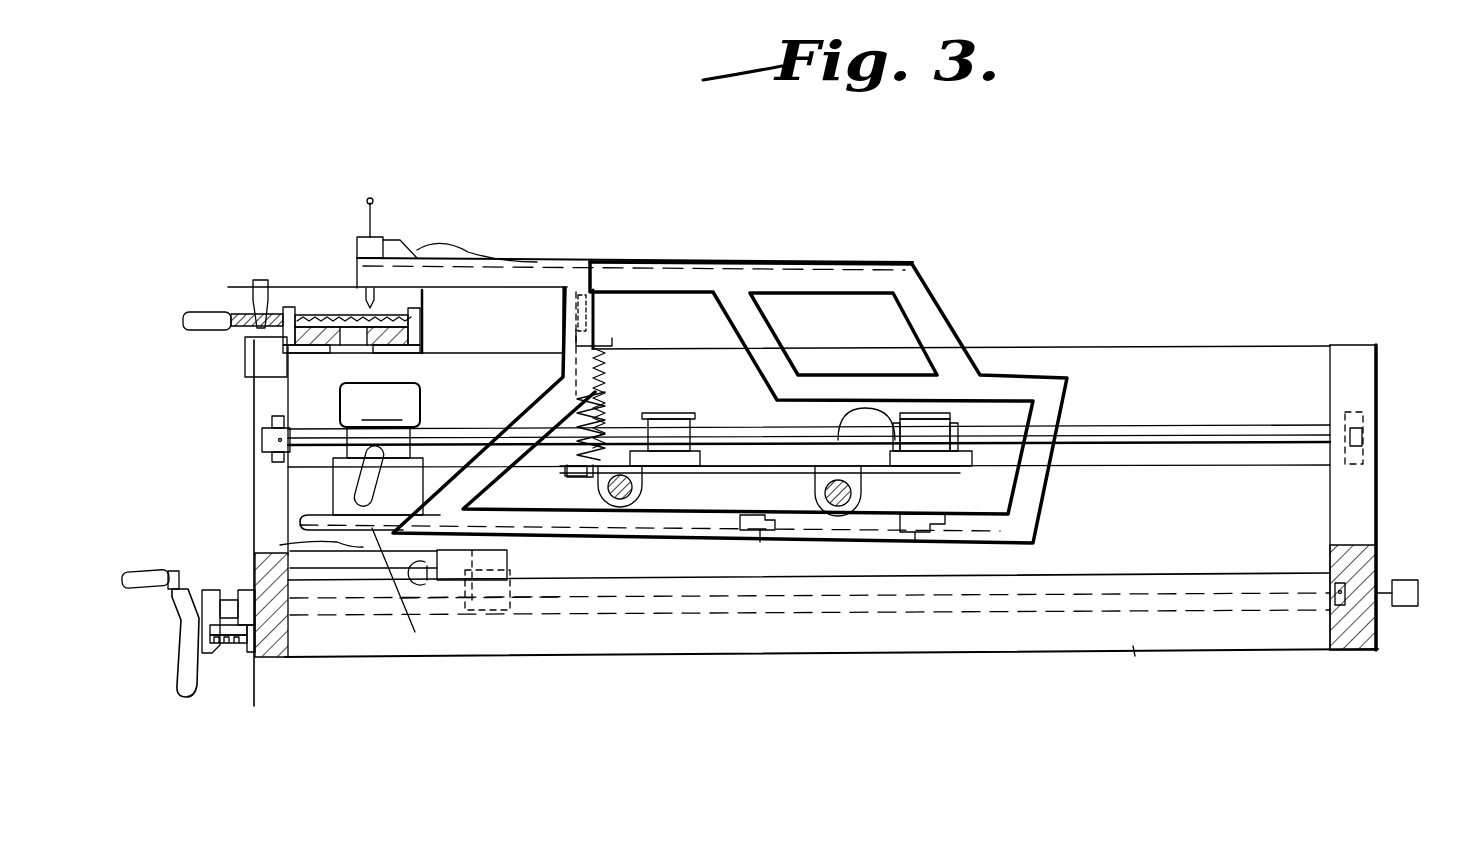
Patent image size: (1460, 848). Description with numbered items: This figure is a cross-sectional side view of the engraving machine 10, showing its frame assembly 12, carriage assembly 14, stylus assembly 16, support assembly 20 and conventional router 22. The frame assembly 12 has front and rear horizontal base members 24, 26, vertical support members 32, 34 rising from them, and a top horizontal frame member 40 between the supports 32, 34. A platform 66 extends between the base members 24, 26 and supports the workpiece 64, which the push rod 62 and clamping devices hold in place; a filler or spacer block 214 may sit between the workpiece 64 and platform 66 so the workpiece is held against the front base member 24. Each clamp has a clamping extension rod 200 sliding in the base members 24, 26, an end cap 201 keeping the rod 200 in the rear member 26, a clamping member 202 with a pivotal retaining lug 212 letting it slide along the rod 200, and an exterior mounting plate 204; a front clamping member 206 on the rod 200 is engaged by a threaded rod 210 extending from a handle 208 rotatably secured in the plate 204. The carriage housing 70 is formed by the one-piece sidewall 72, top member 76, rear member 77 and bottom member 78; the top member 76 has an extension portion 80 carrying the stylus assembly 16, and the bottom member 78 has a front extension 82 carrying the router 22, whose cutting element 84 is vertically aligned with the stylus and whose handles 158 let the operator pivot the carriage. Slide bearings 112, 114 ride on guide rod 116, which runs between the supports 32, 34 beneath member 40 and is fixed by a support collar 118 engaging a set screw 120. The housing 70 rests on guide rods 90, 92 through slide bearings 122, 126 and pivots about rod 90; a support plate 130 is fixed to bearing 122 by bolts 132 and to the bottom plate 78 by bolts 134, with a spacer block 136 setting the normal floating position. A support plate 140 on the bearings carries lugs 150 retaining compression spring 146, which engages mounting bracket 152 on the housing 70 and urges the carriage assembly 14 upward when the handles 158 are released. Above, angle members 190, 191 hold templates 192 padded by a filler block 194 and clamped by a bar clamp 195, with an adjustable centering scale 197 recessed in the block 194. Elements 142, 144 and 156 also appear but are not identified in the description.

The engraving machine 10 is at (448, 790).
The frame assembly 12 is at (1195, 338).
The carriage assembly 14 is at (855, 232).
The stylus assembly 16 is at (343, 242).
The support assembly 20 is at (968, 477).
The conventional router 22 is at (380, 420).
The front horizontal base member 24 is at (268, 660).
The rear horizontal base member 26 is at (1378, 638).
The vertical support member 32 is at (1362, 488).
The vertical support member 34 is at (266, 492).
The top horizontal frame member 40 is at (1275, 355).
The push rod 62 is at (455, 550).
The workpiece 64 is at (459, 585).
The platform 66 is at (1134, 652).
The housing 70 is at (952, 322).
The sidewall 72 is at (965, 352).
The top member 76 is at (545, 262).
The rear member 77 is at (1055, 400).
The bottom member 78 is at (690, 548).
The extension portion 80 is at (452, 250).
The front extension 82 is at (285, 548).
The cutting element 84 is at (415, 588).
The guide rod 90 is at (838, 507).
The guide rod 92 is at (622, 500).
The slide bearing 112 is at (668, 420).
The slide bearing 114 is at (902, 412).
The guide rod 116 is at (1185, 440).
The support collar 118 is at (1350, 452).
The set screw 120 is at (262, 440).
The slide bearing 122 is at (870, 495).
The slide bearing 126 is at (596, 495).
The support plate 130 is at (771, 508).
The bolts 132 is at (919, 511).
The bolts 134 is at (762, 534).
The spacer block 136 is at (986, 499).
The support plate 140 is at (748, 440).
The bracket 142 is at (822, 470).
The stop member 144 is at (668, 492).
The compression spring 146 is at (608, 400).
The lugs 150 is at (540, 455).
The mounting bracket 152 is at (613, 337).
The plunger rod 156 is at (594, 304).
The handles 158 is at (370, 487).
The angle member 190 is at (420, 337).
The angle member 191 is at (242, 330).
The templates 192 is at (385, 313).
The filler block 194 is at (385, 352).
The bar clamp 195 is at (347, 253).
The adjustable centering scale 197 is at (348, 356).
The clamping extension rod 200 is at (988, 656).
The end cap 201 is at (1405, 580).
The clamping member 202 is at (520, 630).
The exterior mounting plate 204 is at (1338, 600).
The front clamping member 206 is at (290, 545).
The handle 208 is at (140, 572).
The threaded rod 210 is at (225, 652).
The pivotal retaining lug 212 is at (555, 555).
The filler or spacer block 214 is at (348, 577).